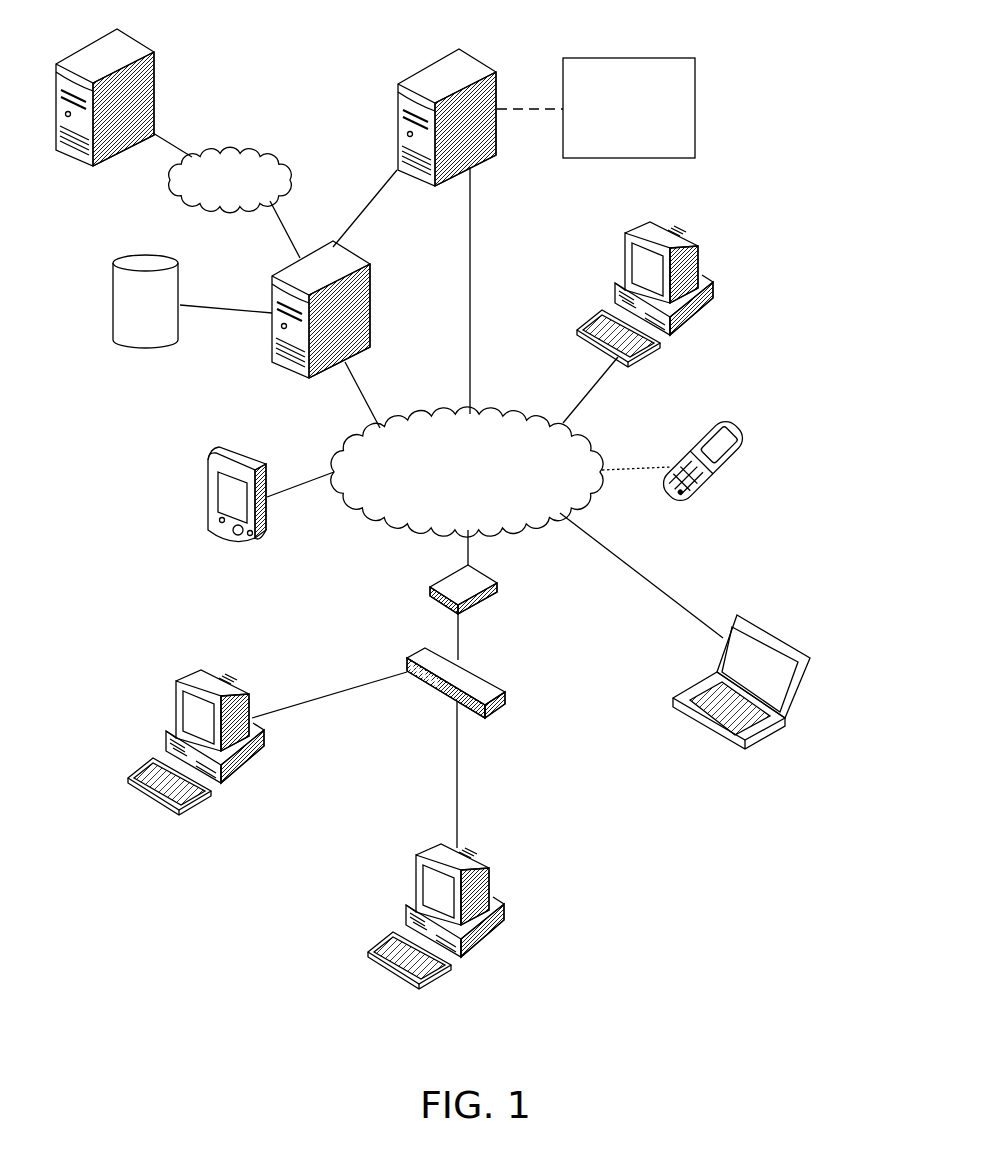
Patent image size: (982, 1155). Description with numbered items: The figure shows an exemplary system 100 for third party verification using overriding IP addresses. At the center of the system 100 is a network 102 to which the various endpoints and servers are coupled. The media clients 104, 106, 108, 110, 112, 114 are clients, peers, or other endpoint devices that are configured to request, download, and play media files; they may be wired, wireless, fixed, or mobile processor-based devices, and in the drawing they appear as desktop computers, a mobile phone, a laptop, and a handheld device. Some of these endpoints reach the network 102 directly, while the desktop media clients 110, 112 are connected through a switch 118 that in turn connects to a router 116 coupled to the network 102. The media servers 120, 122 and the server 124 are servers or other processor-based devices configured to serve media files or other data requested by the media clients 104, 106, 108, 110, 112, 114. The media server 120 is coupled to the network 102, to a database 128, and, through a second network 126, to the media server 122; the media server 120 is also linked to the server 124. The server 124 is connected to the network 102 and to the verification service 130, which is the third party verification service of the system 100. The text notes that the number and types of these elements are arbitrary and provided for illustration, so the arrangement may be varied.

The system 100 is at (109, 1026).
The network 102 is at (467, 472).
The media client 104 is at (672, 228).
The media client 106 is at (738, 430).
The media client 108 is at (797, 643).
The media client 110 is at (488, 851).
The media client 112 is at (201, 661).
The media client 114 is at (206, 480).
The router 116 is at (498, 581).
The switch 118 is at (484, 677).
The media server 120 is at (336, 244).
The media server 122 is at (128, 33).
The server 124 is at (477, 58).
The network 126 is at (230, 180).
The database 128 is at (145, 301).
The verification service 130 is at (629, 108).